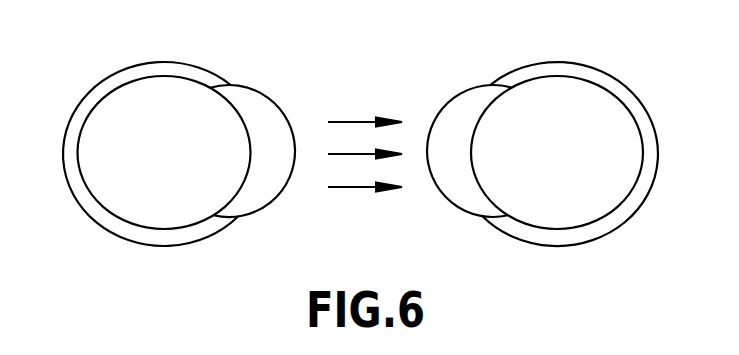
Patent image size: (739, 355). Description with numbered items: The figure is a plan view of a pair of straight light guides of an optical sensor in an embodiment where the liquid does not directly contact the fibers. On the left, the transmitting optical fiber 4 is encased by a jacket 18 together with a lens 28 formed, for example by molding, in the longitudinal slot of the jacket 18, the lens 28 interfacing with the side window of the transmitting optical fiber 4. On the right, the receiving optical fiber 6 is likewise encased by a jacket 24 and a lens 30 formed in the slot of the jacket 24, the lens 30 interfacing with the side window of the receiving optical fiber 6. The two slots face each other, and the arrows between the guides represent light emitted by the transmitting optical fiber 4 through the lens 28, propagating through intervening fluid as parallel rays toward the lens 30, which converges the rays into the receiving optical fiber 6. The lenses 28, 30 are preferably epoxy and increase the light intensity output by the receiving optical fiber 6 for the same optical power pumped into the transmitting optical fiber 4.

The transmitting optical fiber 4 is at (163, 88).
The receiving optical fiber 6 is at (583, 87).
The jacket 18 is at (106, 81).
The jacket 24 is at (623, 222).
The lens 28 is at (269, 97).
The lens 30 is at (469, 88).